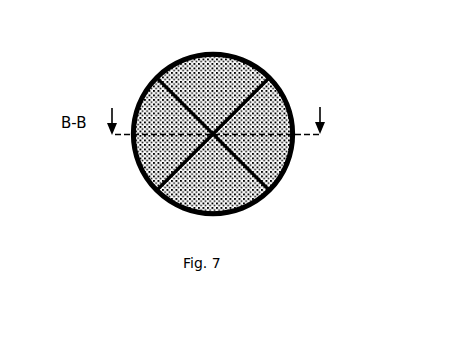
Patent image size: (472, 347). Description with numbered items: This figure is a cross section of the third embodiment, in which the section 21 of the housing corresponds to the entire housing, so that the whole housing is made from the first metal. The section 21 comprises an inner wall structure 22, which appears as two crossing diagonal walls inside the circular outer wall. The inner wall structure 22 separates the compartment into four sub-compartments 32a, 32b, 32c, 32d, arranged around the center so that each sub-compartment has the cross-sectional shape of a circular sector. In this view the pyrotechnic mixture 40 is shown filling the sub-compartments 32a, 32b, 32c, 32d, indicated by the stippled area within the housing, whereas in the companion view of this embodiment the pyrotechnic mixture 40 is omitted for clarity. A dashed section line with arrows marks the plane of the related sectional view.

The section 21 is at (158, 190).
The inner wall structure 22 is at (247, 165).
The sub-compartment 32a is at (163, 122).
The sub-compartment 32b is at (212, 78).
The sub-compartment 32c is at (275, 110).
The sub-compartment 32d is at (230, 190).
The pyrotechnic mixture 40 is at (190, 90).